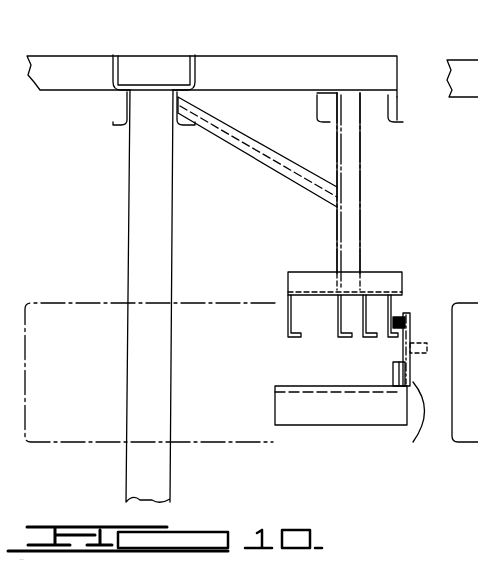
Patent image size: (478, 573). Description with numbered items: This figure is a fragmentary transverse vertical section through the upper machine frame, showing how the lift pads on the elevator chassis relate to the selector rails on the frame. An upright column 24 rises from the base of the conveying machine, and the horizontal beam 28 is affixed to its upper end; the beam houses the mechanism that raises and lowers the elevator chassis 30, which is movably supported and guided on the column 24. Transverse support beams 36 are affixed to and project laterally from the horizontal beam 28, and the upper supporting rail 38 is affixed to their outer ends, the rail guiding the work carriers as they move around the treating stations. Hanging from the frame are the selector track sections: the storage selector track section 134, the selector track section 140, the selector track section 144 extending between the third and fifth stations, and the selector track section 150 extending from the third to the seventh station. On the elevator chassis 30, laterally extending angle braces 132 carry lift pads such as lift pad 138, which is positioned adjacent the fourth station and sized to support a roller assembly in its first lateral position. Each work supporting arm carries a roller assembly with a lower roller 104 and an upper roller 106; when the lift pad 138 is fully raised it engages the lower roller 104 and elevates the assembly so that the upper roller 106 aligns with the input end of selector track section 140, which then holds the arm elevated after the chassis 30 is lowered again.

The upright columns 24 is at (130, 196).
The horizontal beam 28 is at (196, 86).
The elevator chassis 30 is at (186, 298).
The transverse support beams 36 is at (290, 65).
The upper supporting rail 38 is at (403, 120).
The lower roller 104 is at (393, 372).
The upper roller 106 is at (420, 296).
The angle braces 132 is at (313, 414).
The storage selector track section 134 is at (278, 290).
The lift pad 138 is at (430, 431).
The selector track section 140 is at (390, 346).
The selector track section 144 is at (384, 290).
The selector track section 150 is at (340, 313).